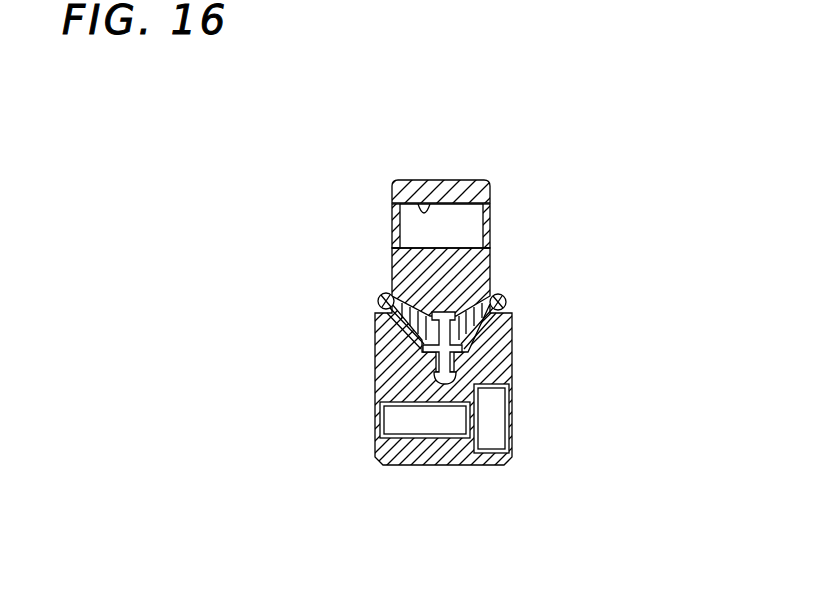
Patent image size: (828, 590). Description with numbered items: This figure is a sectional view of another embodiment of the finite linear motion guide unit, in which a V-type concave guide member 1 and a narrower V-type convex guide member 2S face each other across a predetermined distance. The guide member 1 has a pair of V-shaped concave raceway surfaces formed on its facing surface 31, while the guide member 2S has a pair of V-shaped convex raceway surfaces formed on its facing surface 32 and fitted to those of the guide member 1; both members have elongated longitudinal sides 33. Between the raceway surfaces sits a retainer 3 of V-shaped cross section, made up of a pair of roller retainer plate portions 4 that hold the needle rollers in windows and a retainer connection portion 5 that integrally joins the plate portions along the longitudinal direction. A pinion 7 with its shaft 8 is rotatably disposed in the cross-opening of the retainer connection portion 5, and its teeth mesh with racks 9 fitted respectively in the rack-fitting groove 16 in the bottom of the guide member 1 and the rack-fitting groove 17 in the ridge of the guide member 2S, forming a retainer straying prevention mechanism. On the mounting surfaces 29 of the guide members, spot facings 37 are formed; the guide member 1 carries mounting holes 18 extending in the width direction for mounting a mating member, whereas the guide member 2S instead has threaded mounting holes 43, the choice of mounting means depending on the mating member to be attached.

The V-type concave guide member 1 is at (448, 455).
The V-type convex guide member 2S is at (478, 268).
The retainer 3 is at (508, 300).
The roller retainer plate portions 4 is at (380, 298).
The retainer connection portion 5 is at (399, 290).
The pinion 7 is at (395, 392).
The shaft 8 is at (400, 352).
The racks 9 is at (426, 305).
The rack-fitting groove 16 is at (443, 388).
The rack-fitting groove 17 is at (505, 296).
The mounting holes 18 is at (380, 457).
The mounting surfaces 29 is at (393, 297).
The facing surface 31 is at (377, 323).
The facing surface 32 is at (483, 325).
The longitudinal sides 33 is at (467, 182).
The spot facings 37 is at (512, 443).
The threaded mounting holes 43 is at (424, 214).